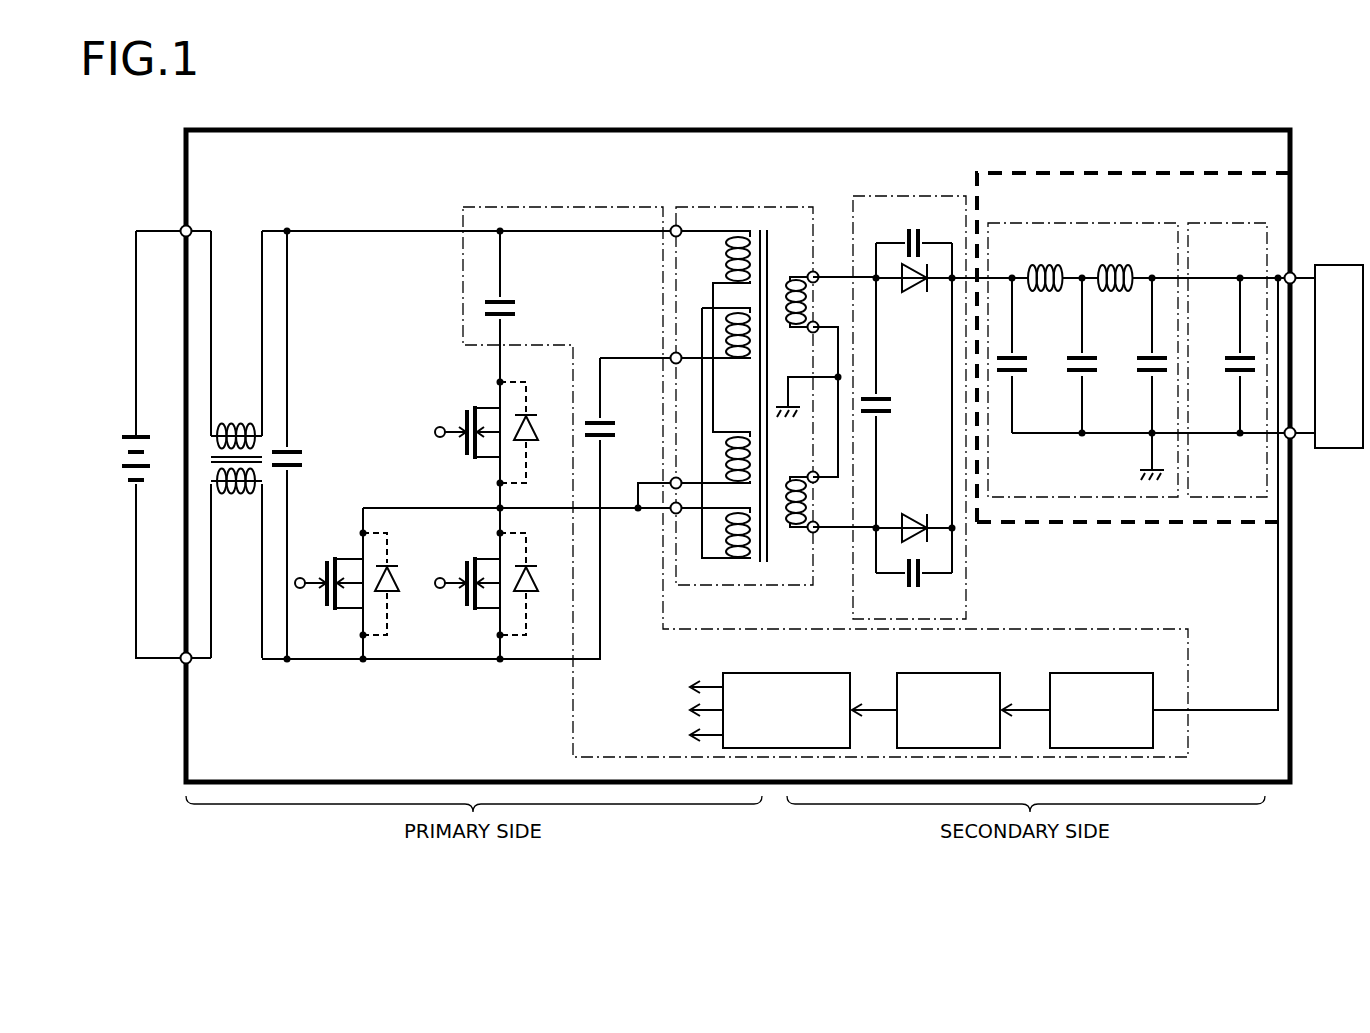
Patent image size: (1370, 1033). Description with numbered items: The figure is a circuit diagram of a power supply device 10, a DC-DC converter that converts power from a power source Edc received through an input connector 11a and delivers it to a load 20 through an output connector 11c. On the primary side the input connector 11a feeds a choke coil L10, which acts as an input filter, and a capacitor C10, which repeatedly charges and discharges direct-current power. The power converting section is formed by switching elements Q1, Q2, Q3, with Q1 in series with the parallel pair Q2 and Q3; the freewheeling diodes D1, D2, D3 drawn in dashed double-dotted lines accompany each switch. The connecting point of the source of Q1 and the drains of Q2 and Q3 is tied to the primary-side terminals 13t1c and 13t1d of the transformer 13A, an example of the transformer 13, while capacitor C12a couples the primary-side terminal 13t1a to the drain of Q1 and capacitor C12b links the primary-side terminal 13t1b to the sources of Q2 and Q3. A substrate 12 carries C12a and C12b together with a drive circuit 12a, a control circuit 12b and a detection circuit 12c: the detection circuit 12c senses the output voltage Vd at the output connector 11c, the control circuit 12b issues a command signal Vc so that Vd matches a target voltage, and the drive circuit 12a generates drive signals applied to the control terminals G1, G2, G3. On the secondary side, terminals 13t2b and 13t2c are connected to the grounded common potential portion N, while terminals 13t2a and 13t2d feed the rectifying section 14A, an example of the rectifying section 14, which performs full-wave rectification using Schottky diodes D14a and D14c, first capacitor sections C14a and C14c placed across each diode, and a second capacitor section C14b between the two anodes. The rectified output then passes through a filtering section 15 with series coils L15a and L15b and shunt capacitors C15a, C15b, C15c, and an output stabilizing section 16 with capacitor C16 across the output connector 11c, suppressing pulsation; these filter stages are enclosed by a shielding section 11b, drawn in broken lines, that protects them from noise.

The power supply device 10 is at (565, 130).
The input connector 11a is at (181, 229).
The shielding section 11b is at (1130, 525).
The output connector 11c is at (1287, 272).
The substrate 12 is at (540, 206).
The drive circuit 12a is at (773, 673).
The control circuit 12b is at (951, 673).
The detection circuit 12c is at (1101, 673).
The transformer 13A is at (716, 385).
The transformer 13 is at (740, 206).
The primary-side terminal 13t1a is at (671, 236).
The primary-side terminal 13t1b is at (670, 356).
The primary-side terminal 13t1c is at (672, 488).
The primary-side terminal 13t1d is at (678, 513).
The secondary-side terminal 13t2a is at (816, 272).
The secondary-side terminal 13t2b is at (811, 321).
The secondary-side terminal 13t2c is at (811, 483).
The secondary-side terminal 13t2d is at (816, 532).
The rectifying section 14A is at (891, 392).
The rectifying section 14 is at (860, 196).
The filtering section 15 is at (1042, 222).
The output stabilizing section 16 is at (1235, 222).
The load 20 is at (1343, 264).
The power source Edc is at (144, 444).
The choke coil L10 is at (236, 444).
The capacitor C10 is at (309, 445).
The capacitor C12a is at (528, 305).
The capacitor C12b is at (630, 508).
The switching element Q1 is at (469, 431).
The switching element Q2 is at (331, 585).
The switching element Q3 is at (469, 594).
The diode D1 is at (532, 432).
The diode D2 is at (392, 584).
The diode D3 is at (532, 584).
The control terminal G1 is at (438, 437).
The control terminal G2 is at (298, 588).
The control terminal G3 is at (438, 588).
The common potential portion N is at (800, 397).
The first capacitor section C14a is at (914, 228).
The second capacitor section C14b is at (901, 391).
The first capacitor section C14c is at (914, 583).
The diode D14a is at (914, 293).
The diode D14c is at (914, 515).
The coil L15a is at (1037, 265).
The coil L15b is at (1111, 265).
The capacitor C15a is at (1018, 374).
The capacitor C15b is at (1072, 355).
The capacitor C15c is at (1142, 355).
The capacitor C16 is at (1229, 356).
The command signal Vc is at (873, 686).
The voltage Vd is at (1025, 690).